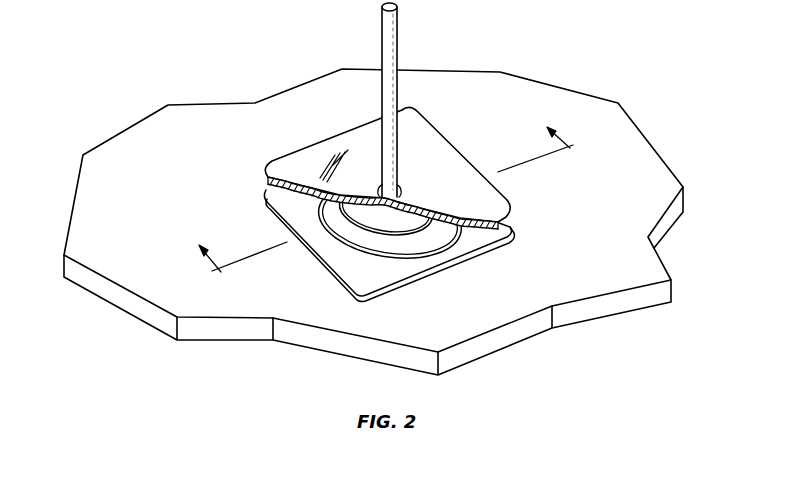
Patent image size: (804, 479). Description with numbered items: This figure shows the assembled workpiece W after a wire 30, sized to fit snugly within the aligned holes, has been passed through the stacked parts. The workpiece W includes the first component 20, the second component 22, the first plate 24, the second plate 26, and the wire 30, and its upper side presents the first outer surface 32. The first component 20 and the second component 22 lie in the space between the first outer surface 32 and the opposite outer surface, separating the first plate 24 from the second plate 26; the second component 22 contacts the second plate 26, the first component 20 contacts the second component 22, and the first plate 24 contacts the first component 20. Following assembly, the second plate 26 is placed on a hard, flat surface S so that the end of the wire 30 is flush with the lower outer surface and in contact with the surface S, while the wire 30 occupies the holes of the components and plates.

The first component 20 is at (400, 213).
The second component 22 is at (445, 222).
The first plate 24 is at (387, 168).
The second plate 26 is at (406, 237).
The wire 30 is at (387, 30).
The first outer surface 32 is at (426, 147).
The workpiece W is at (387, 159).
The surface S is at (610, 207).